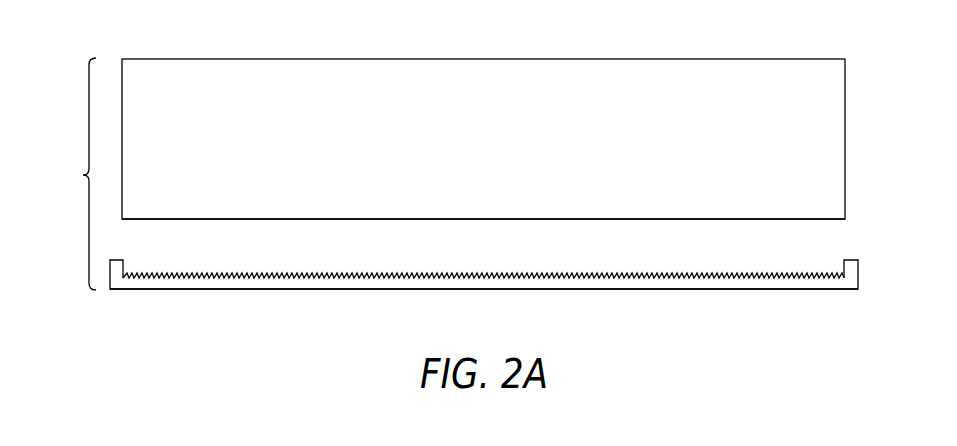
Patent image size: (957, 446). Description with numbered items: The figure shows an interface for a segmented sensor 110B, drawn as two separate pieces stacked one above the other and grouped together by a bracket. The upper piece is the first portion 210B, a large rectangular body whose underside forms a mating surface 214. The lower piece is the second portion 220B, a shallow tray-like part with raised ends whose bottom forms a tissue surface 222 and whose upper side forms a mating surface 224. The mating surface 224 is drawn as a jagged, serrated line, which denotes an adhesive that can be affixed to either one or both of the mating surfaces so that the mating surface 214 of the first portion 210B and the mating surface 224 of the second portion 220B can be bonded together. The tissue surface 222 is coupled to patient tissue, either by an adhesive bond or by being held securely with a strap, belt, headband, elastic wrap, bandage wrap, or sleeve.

The segmented sensor 110B is at (68, 174).
The first portion 210B is at (485, 58).
The mating surface 214 is at (686, 220).
The second portion 220B is at (170, 290).
The tissue surface 222 is at (484, 290).
The mating surface 224 is at (688, 273).